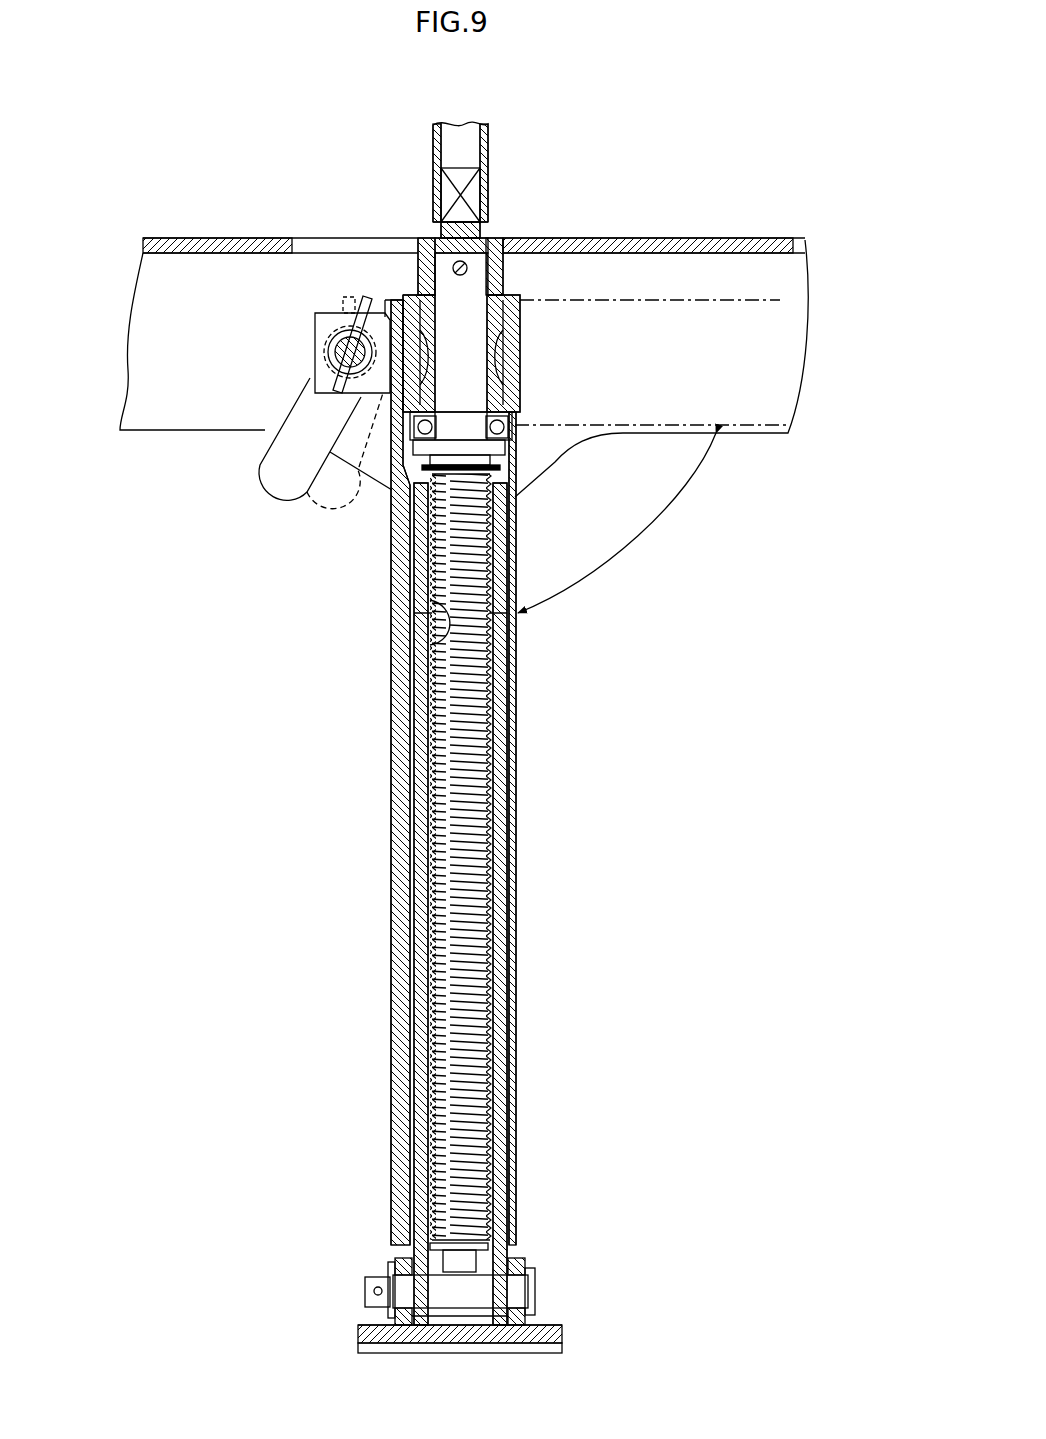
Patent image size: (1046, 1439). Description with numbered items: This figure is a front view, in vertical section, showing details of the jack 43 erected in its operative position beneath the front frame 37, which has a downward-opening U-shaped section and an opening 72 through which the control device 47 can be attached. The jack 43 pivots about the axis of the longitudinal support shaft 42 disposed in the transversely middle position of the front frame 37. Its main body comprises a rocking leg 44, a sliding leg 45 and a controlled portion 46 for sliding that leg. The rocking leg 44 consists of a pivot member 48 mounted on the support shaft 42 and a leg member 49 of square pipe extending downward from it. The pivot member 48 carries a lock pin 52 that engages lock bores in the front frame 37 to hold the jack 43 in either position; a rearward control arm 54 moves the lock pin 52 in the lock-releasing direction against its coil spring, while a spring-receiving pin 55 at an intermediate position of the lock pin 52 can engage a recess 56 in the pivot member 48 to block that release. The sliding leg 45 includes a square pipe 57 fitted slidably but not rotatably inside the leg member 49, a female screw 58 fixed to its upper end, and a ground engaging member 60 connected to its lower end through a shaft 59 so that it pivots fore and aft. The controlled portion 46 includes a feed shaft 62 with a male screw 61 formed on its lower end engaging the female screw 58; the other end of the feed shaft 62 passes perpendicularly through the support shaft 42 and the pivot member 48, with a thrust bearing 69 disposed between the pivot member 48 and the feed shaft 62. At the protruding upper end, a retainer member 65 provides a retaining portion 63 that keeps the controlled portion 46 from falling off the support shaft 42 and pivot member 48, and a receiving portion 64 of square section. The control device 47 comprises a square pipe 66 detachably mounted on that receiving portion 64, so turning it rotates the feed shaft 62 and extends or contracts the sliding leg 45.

The front frame 37 is at (716, 240).
The support shaft 42 is at (498, 350).
The jack 43 is at (764, 435).
The rocking leg 44 is at (390, 965).
The sliding leg 45 is at (352, 1325).
The controlled portion 46 is at (461, 346).
The control device 47 is at (490, 135).
The pivot member 48 is at (520, 382).
The leg member 49 is at (510, 855).
The lock pin 52 is at (336, 346).
The control arm 54 is at (308, 493).
The spring-receiving pin 55 is at (340, 390).
The recess 56 is at (368, 298).
The square pipe 57 is at (412, 1250).
The female screw 58 is at (450, 628).
The shaft 59 is at (535, 1287).
The ground engaging member 60 is at (562, 1330).
The male screw 61 is at (496, 965).
The feed shaft 62 is at (490, 775).
The retaining portion 63 is at (505, 268).
The receiving portion 64 is at (446, 192).
The retainer member 65 is at (505, 238).
The square pipe 66 is at (432, 140).
The thrust bearing 69 is at (497, 430).
The opening 72 is at (345, 245).